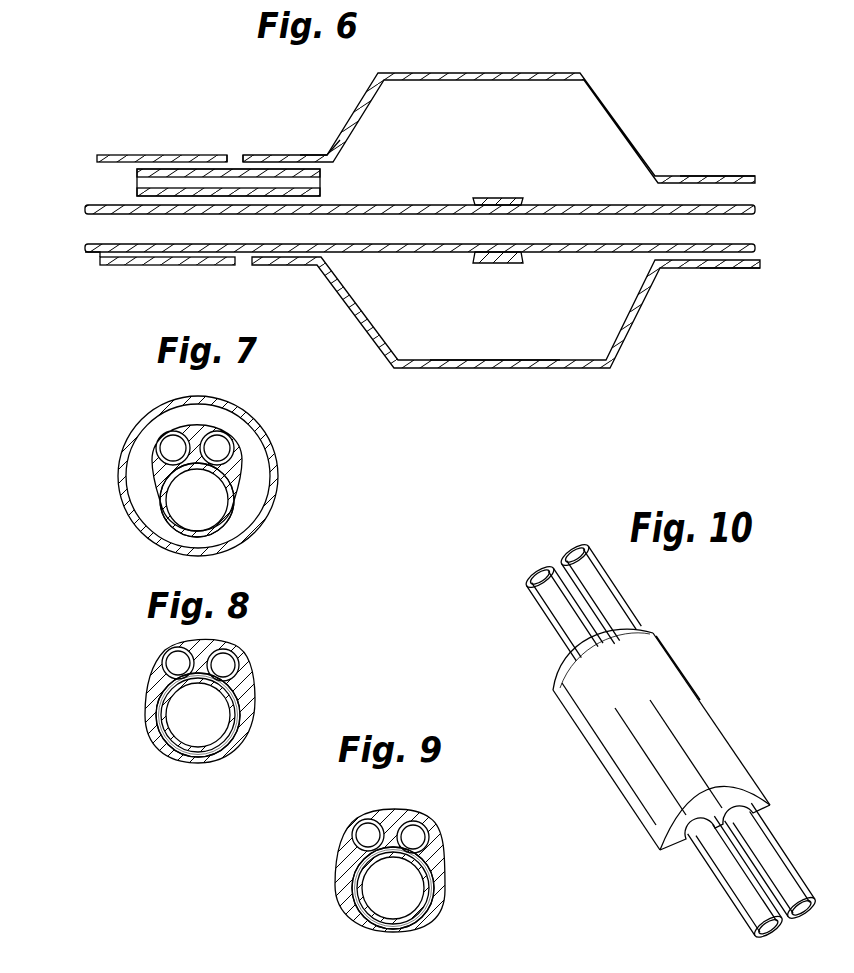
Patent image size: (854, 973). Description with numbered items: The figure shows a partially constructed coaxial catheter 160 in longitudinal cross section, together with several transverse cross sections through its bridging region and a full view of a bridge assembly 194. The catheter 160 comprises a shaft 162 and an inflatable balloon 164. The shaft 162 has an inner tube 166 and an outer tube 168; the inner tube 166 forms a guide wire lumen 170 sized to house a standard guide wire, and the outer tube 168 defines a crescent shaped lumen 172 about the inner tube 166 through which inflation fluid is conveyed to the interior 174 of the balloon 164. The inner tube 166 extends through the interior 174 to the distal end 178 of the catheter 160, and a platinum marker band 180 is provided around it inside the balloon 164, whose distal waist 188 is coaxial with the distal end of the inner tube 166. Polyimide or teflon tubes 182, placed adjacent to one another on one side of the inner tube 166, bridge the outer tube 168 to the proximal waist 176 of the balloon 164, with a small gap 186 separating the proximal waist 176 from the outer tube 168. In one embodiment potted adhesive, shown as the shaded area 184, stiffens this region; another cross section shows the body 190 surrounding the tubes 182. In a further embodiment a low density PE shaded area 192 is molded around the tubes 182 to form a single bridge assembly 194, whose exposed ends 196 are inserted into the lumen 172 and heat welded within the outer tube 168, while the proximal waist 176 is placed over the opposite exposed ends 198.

In FIG. 6, the catheter 160 is at (185, 100).
In FIG. 6, the shaft 162 is at (98, 135).
In FIG. 6, the inflatable balloon 164 is at (618, 127).
In FIG. 6, the inner tube 166 is at (83, 200).
In FIG. 7, the inner tube 166 is at (228, 522).
In FIG. 8, the inner tube 166 is at (217, 755).
In FIG. 9, the inner tube 166 is at (397, 925).
In FIG. 6, the outer tube 168 is at (155, 266).
In FIG. 7, the outer tube 168 is at (166, 404).
In FIG. 8, the outer tube 168 is at (250, 702).
In FIG. 6, the guide wire lumen 170 is at (106, 224).
In FIG. 6, the crescent shaped lumen 172 is at (108, 183).
In FIG. 8, the crescent shaped lumen 172 is at (155, 713).
In FIG. 9, the crescent shaped lumen 172 is at (338, 878).
In FIG. 6, the interior of the balloon 174 is at (453, 328).
In FIG. 6, the proximal waist 176 is at (302, 150).
In FIG. 6, the distal end 178 is at (716, 310).
In FIG. 6, the platinum marker band 180 is at (517, 193).
In FIG. 6, the polyimide or teflon tubes 182 is at (165, 167).
In FIG. 7, the polyimide or teflon tubes 182 is at (188, 428).
In FIG. 8, the polyimide or teflon tubes 182 is at (191, 649).
In FIG. 9, the polyimide or teflon tubes 182 is at (384, 815).
In FIG. 10, the polyimide or teflon tubes 182 is at (570, 602).
In FIG. 7, the shaded area 184 is at (242, 463).
In FIG. 6, the gap 186 is at (236, 150).
In FIG. 6, the distal waist 188 is at (698, 171).
In FIG. 8, the body member 190 is at (253, 682).
In FIG. 9, the shaded area 192 is at (438, 852).
In FIG. 10, the shaded area 192 is at (614, 716).
In FIG. 9, the bridge assembly 194 is at (311, 866).
In FIG. 10, the bridge assembly 194 is at (699, 667).
In FIG. 10, the exposed ends 196 is at (543, 626).
In FIG. 10, the exposed ends 198 is at (718, 895).